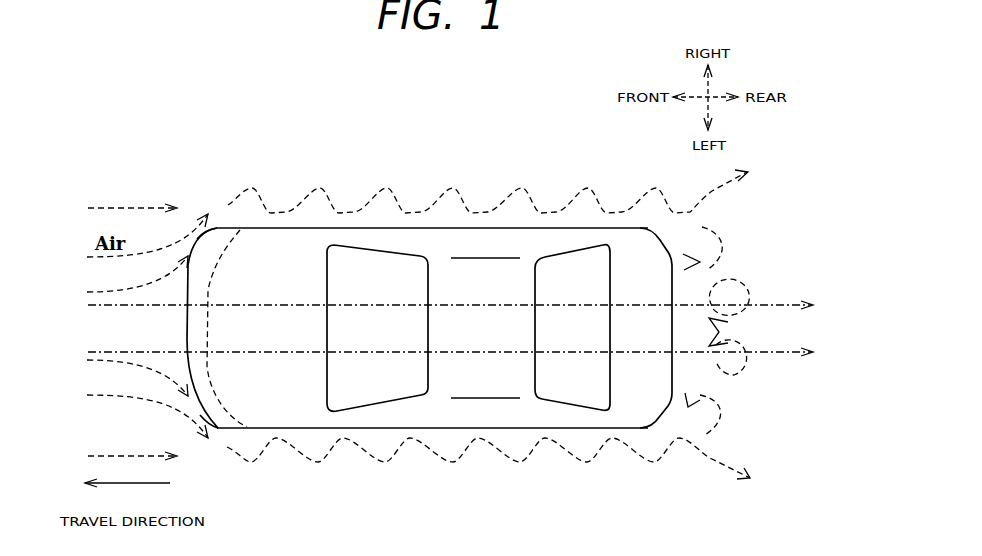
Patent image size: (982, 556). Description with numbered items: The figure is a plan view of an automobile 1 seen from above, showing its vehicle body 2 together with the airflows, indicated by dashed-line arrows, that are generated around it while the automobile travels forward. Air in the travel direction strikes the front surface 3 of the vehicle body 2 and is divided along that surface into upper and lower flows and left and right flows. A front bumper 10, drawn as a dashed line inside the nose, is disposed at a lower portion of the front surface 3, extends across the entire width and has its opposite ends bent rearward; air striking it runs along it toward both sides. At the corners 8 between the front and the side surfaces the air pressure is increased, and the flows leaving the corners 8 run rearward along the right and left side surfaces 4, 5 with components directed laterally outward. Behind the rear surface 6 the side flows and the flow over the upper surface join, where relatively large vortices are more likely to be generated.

The automobile 1 is at (541, 178).
The vehicle body 2 is at (480, 232).
The front surface 3 is at (188, 321).
The right side surface 4 is at (420, 228).
The left side surface 5 is at (420, 430).
The rear surface 6 is at (673, 333).
The corners 8 is at (216, 226).
The front bumper 10 is at (232, 230).